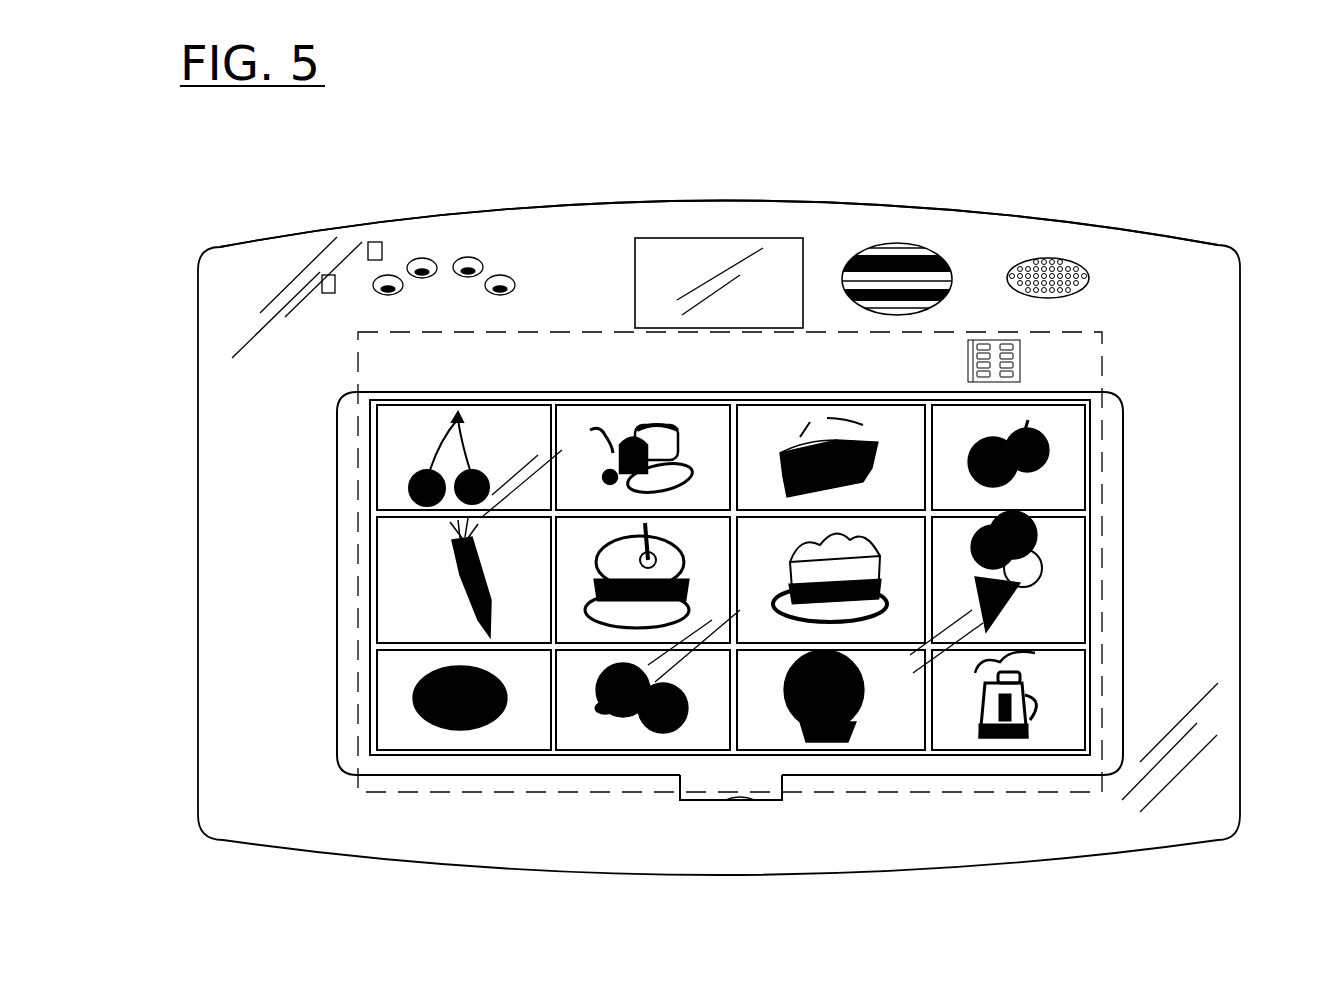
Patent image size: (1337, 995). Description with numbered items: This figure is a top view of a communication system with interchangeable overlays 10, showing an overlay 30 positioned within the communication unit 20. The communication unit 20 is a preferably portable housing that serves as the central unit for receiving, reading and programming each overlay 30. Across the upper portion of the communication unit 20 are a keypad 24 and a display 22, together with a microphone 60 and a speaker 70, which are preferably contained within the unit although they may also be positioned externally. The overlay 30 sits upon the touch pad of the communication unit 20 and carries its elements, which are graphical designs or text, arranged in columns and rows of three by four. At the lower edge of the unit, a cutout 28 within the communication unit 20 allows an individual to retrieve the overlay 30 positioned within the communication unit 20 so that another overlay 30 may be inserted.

The communication system with interchangeable overlays 10 is at (1027, 167).
The communication unit 20 is at (1073, 222).
The display 22 is at (727, 250).
The keypad 24 is at (420, 260).
The cutout 28 is at (760, 800).
The overlay 30 is at (1100, 398).
The microphone 60 is at (1088, 268).
The speaker 70 is at (893, 262).